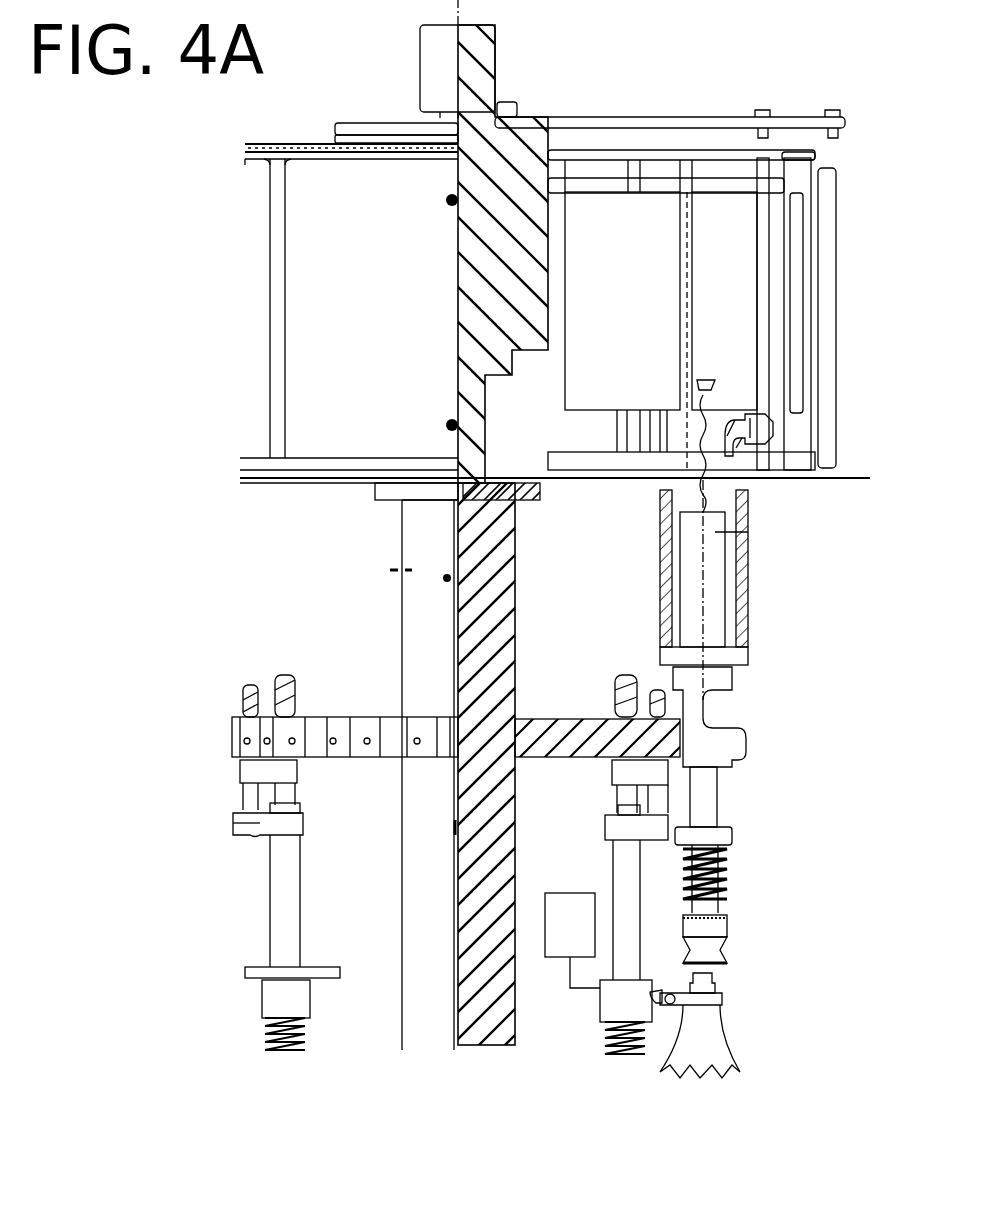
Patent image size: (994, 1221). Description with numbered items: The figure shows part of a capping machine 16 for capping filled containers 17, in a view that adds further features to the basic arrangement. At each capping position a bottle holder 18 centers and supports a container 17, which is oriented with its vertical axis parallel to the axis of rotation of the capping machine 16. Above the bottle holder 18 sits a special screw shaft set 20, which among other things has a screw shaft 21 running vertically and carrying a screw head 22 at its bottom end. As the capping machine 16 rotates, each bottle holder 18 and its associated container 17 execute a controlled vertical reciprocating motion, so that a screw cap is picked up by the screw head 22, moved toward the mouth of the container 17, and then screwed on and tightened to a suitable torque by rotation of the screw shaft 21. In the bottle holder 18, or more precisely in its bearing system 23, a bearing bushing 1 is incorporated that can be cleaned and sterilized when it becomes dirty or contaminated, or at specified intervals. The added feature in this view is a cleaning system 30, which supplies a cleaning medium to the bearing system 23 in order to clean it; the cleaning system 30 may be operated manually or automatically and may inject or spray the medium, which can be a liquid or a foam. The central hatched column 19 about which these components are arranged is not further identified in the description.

The capping machine 16 is at (638, 92).
The column 19 is at (490, 613).
The screw shaft set 20 is at (785, 708).
The screw shaft 21 is at (713, 785).
The screw head 22 is at (712, 926).
The bottle holder 18 is at (700, 996).
The container 17 is at (705, 1050).
The bearing system 23 is at (283, 1000).
The bearing bushing 1 is at (260, 1025).
The cleaning system 30 is at (567, 905).